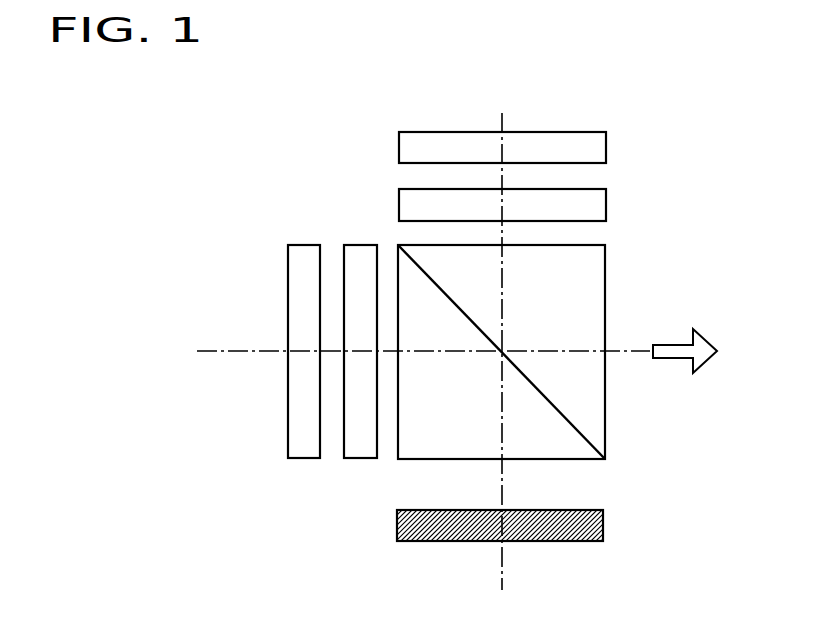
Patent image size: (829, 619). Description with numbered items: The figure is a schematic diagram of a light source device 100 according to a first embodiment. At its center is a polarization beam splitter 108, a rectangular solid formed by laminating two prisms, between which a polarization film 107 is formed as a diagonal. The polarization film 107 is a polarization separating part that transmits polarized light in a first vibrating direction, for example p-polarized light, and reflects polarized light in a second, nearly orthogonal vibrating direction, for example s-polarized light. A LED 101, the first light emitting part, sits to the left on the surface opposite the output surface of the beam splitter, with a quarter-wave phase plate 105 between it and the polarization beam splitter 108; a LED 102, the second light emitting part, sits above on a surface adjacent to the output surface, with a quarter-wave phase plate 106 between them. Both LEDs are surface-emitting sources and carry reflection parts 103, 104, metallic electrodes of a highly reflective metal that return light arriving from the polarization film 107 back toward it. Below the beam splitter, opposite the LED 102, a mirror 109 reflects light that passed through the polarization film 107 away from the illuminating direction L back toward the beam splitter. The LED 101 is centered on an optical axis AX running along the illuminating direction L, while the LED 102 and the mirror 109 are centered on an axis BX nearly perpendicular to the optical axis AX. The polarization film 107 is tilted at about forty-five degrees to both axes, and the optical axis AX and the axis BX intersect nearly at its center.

The light source device 100 is at (603, 113).
The LED 101 is at (307, 257).
The LED 102 is at (597, 147).
The reflection part 103 is at (297, 430).
The reflection part 104 is at (437, 139).
The λ/4 phase plate 105 is at (361, 258).
The λ/4 phase plate 106 is at (597, 204).
The polarization film 107 is at (580, 432).
The polarization beam splitter 108 is at (596, 272).
The mirror 109 is at (603, 523).
The optical axis AX is at (222, 346).
The axis BX is at (503, 566).
The illuminating direction L is at (680, 344).